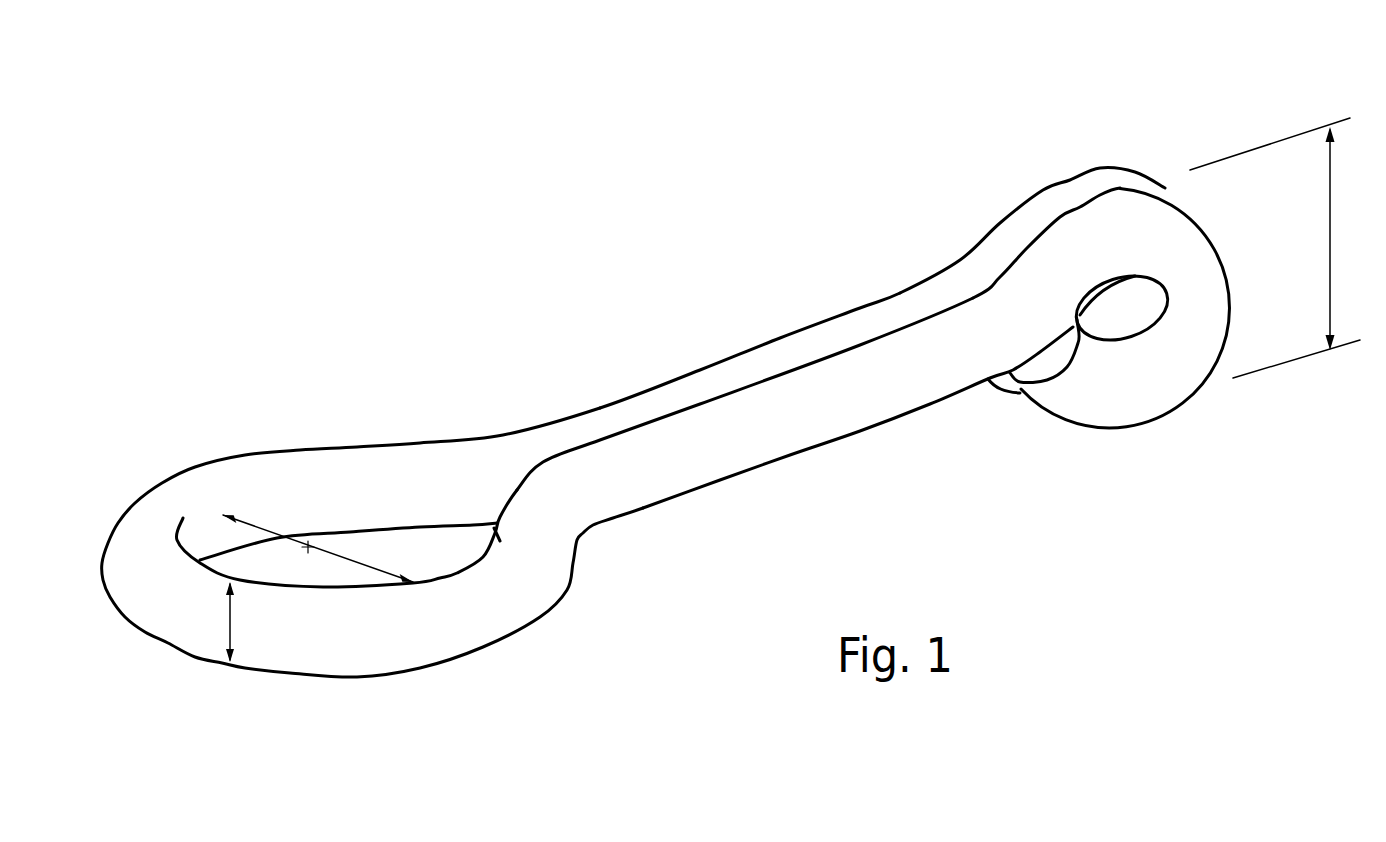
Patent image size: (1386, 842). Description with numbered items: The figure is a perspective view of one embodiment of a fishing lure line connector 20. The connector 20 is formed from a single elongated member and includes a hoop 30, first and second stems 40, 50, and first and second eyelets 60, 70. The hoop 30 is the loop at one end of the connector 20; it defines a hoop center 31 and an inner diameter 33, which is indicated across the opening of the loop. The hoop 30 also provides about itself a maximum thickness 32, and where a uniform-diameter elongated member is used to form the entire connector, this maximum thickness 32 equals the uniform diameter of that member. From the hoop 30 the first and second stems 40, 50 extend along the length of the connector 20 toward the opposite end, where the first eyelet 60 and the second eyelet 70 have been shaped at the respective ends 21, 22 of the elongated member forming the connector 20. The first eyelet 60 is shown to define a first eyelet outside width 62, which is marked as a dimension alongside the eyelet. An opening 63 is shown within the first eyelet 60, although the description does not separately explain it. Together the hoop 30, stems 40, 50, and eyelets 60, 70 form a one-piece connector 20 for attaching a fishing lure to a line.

The connector 20 is at (403, 107).
The first end 21 is at (1070, 377).
The second end 22 is at (1010, 373).
The hoop 30 is at (357, 647).
The hoop center 31 is at (310, 558).
The maximum thickness 32 is at (228, 623).
The inner diameter 33 is at (258, 522).
The first stem 40 is at (793, 422).
The second stem 50 is at (783, 348).
The first eyelet 60 is at (1170, 390).
The first eyelet outside width 62 is at (1333, 307).
The hole in head 63 is at (1153, 293).
The second eyelet 70 is at (1073, 190).